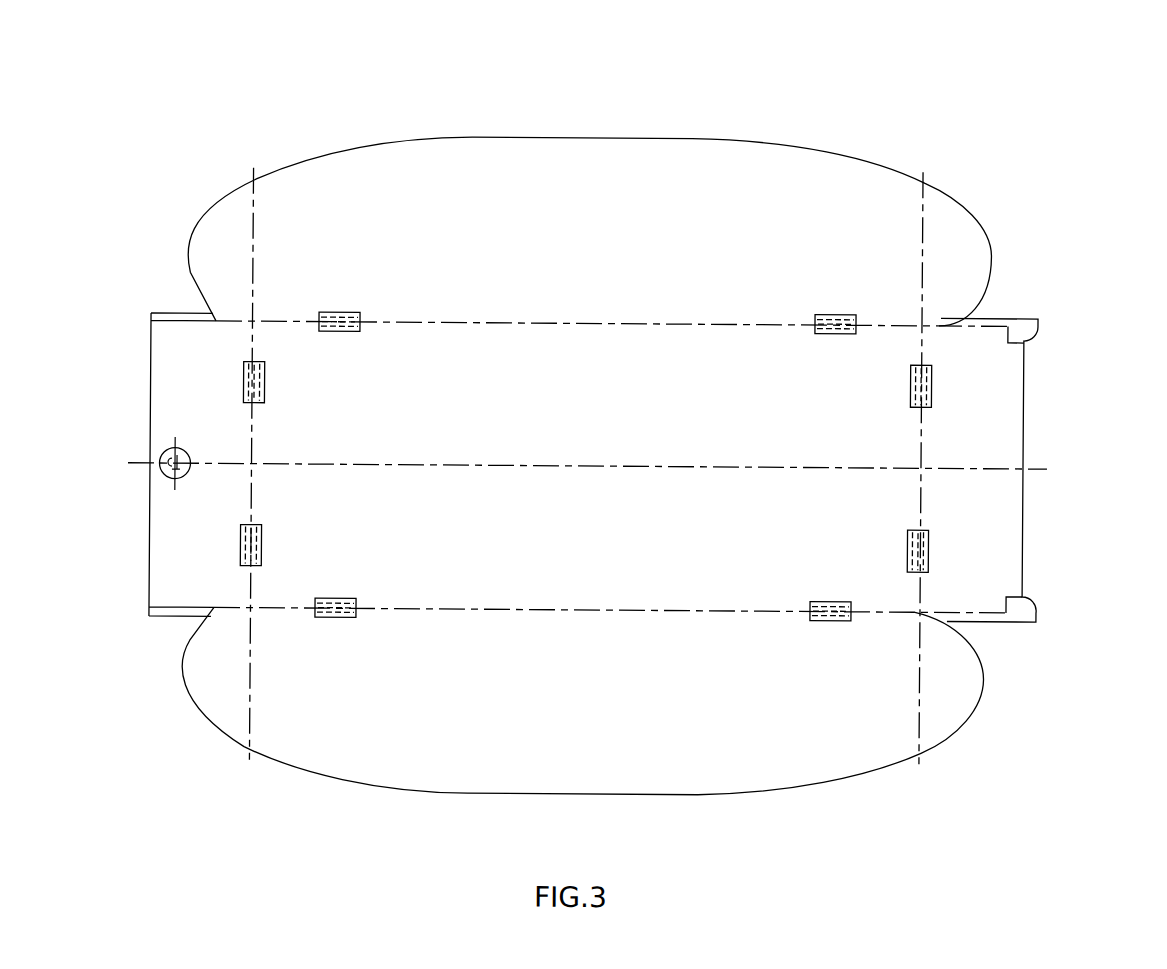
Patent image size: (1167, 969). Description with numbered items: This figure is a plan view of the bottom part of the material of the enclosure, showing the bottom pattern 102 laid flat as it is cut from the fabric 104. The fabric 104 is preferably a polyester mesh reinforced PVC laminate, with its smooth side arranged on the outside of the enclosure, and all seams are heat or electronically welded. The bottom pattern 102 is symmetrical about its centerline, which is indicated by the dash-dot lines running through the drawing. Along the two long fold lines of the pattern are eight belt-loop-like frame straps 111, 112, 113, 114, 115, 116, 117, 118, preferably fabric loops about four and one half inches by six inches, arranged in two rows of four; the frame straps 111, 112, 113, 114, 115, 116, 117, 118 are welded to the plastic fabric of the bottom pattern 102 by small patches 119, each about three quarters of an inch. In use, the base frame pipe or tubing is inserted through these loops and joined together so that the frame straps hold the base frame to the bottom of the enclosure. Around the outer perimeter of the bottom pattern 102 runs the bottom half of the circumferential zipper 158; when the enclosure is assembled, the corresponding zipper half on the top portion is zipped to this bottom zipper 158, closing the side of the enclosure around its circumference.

The bottom pattern 102 is at (718, 117).
The fabric 104 is at (810, 193).
The frame strap 111 is at (788, 303).
The frame strap 112 is at (909, 385).
The frame strap 113 is at (908, 550).
The frame strap 114 is at (831, 620).
The frame strap 115 is at (332, 620).
The frame strap 116 is at (262, 550).
The frame strap 117 is at (264, 384).
The frame strap 118 is at (337, 314).
The patch 119 is at (835, 313).
The bottom zipper 158 is at (508, 139).